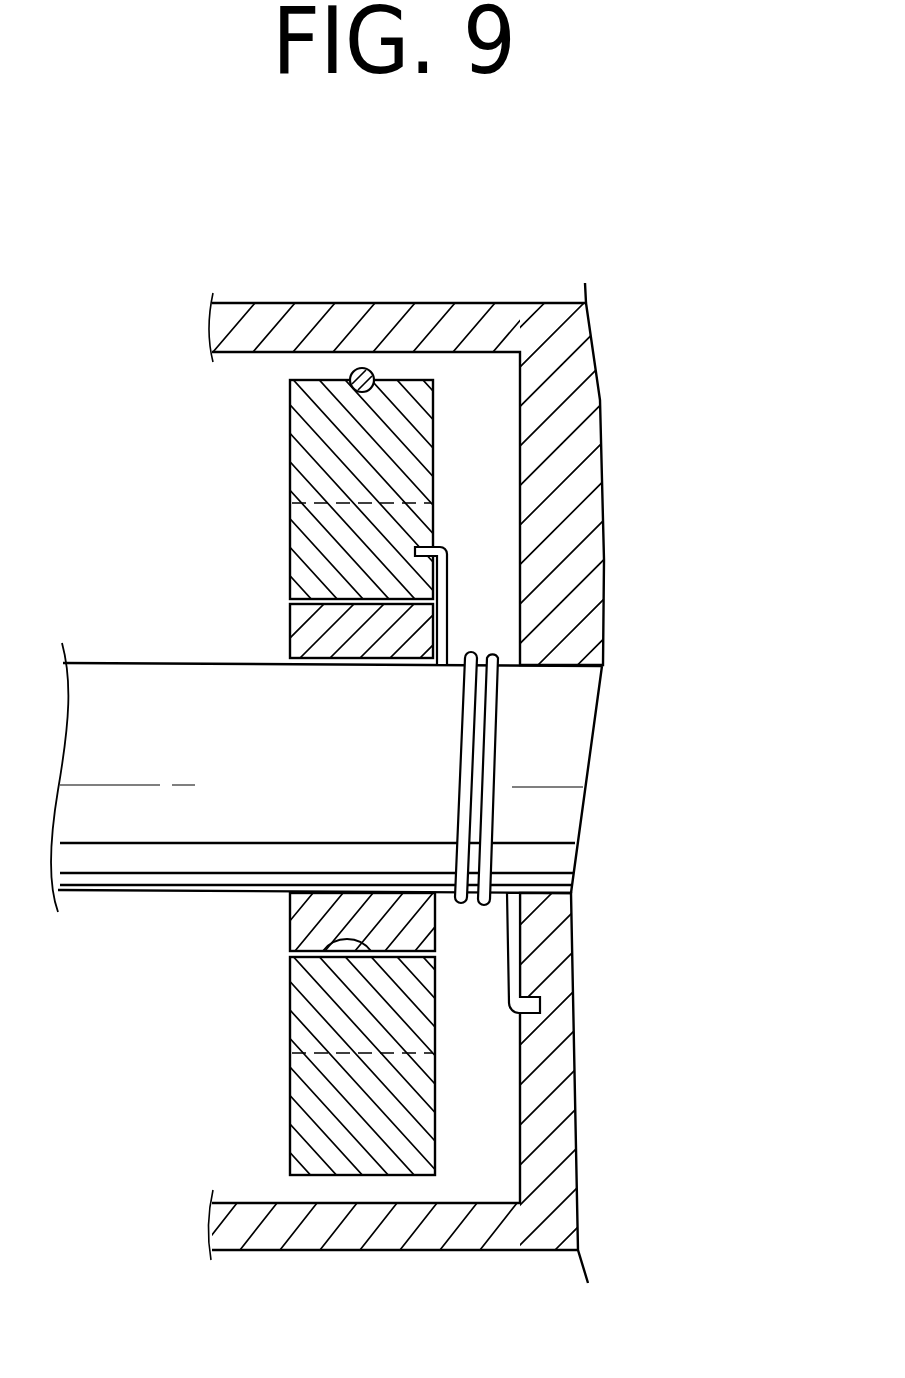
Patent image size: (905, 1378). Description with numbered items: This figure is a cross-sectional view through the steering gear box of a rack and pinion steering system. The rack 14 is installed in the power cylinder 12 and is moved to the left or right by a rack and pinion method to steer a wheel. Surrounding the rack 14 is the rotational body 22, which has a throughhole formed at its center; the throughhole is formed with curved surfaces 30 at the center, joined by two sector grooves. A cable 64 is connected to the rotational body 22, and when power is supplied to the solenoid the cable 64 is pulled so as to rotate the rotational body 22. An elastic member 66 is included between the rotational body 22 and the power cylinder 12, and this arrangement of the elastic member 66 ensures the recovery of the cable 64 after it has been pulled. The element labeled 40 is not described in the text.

The power cylinder 12 is at (568, 423).
The rack 14 is at (130, 683).
The rotational body 22 is at (302, 425).
The curved surfaces 30 is at (315, 962).
The spacer 40 is at (313, 627).
The cable 64 is at (358, 370).
The elastic member 66 is at (447, 624).